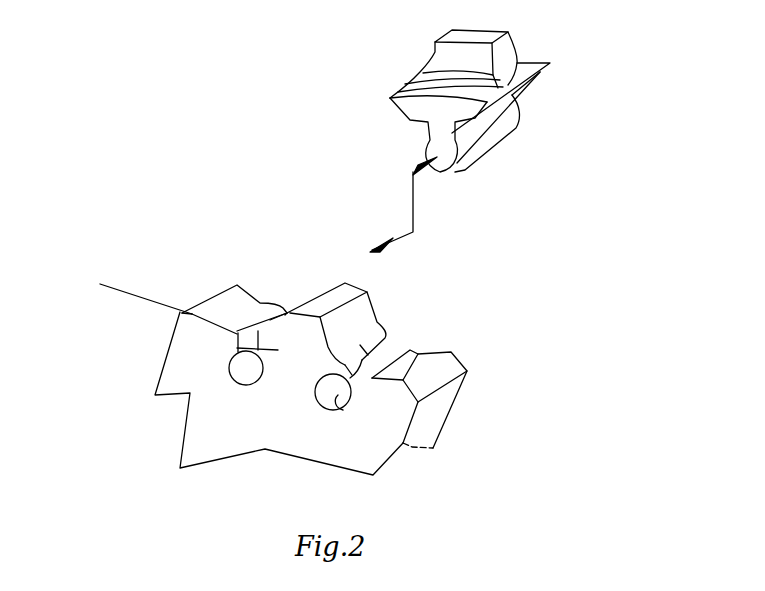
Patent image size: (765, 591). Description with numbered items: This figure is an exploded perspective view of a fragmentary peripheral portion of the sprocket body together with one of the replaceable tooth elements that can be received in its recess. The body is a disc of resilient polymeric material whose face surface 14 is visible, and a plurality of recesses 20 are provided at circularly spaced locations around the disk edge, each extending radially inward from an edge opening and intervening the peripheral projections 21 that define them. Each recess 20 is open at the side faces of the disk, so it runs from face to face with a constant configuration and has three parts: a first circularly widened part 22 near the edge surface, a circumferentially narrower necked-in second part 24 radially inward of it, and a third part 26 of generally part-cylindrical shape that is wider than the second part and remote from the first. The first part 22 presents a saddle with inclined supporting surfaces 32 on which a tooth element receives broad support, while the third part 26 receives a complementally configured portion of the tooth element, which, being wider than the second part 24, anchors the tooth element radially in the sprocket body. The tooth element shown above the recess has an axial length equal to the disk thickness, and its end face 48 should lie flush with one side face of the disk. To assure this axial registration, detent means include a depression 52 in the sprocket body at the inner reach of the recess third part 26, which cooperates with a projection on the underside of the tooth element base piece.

The face surface 14 is at (352, 456).
The recess 20 is at (267, 303).
The peripheral projection 21 is at (237, 348).
The first circularly widened part 22 is at (233, 298).
The second part 24 is at (317, 375).
The third part 26 is at (237, 370).
The inclined supporting surfaces 32 is at (367, 310).
The end face 48 is at (470, 101).
The depression 52 is at (343, 397).